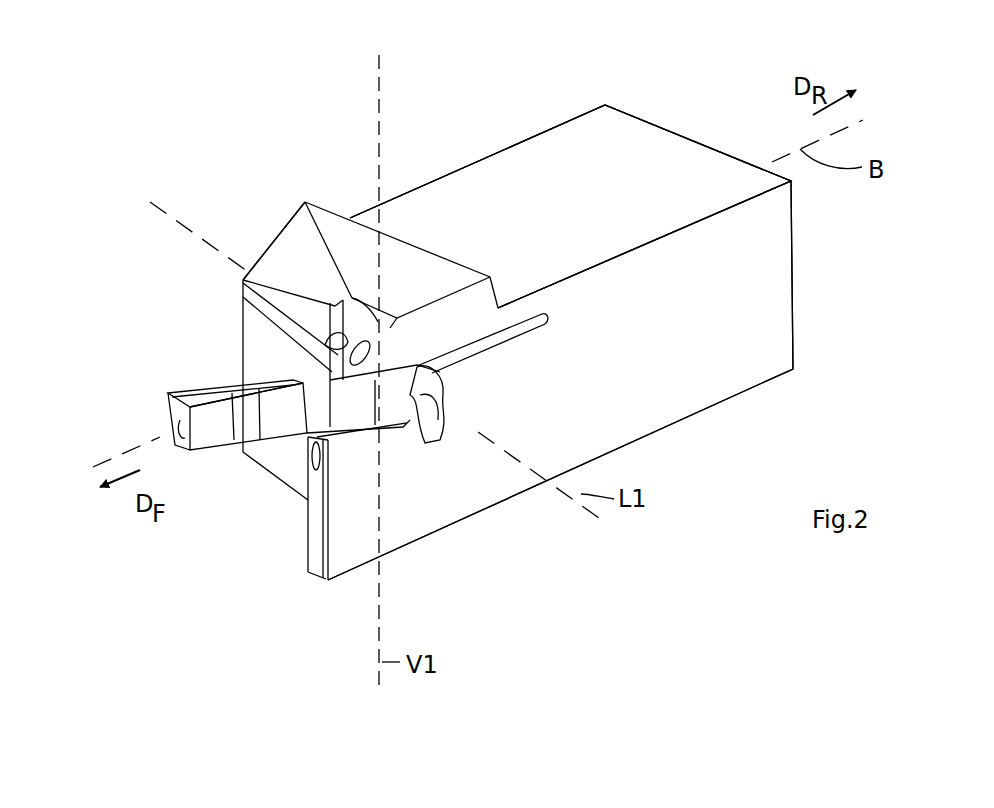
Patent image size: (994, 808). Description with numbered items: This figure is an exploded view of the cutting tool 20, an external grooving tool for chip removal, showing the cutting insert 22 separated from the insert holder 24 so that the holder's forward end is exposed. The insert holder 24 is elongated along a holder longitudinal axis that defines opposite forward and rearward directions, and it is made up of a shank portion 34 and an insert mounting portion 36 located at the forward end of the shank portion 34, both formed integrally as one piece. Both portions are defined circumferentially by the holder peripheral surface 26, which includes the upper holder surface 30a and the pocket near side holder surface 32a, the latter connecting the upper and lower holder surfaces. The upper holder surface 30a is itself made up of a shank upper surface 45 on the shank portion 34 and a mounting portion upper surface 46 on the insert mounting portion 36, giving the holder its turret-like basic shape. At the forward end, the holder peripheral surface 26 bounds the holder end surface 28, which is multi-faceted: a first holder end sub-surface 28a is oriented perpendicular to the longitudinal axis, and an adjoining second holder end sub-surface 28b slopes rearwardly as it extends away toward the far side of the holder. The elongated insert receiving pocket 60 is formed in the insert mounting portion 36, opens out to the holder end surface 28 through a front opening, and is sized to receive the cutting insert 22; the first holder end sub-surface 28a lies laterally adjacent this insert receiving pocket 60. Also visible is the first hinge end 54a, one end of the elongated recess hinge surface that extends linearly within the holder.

The cutting tool 20 is at (244, 207).
The cutting insert 22 is at (213, 507).
The insert holder 24 is at (442, 134).
The holder peripheral surface 26 is at (686, 385).
The holder end surface 28 is at (110, 310).
The first holder end sub-surface 28a is at (320, 313).
The second holder end sub-surface 28b is at (277, 368).
The upper holder surface 30a is at (561, 220).
The pocket near side holder surface 32a is at (589, 398).
The shank portion 34 is at (554, 157).
The insert mounting portion 36 is at (290, 263).
The shank upper surface 45 is at (607, 163).
The mounting portion upper surface 46 is at (346, 250).
The first hinge end 54a is at (548, 318).
The insert receiving pocket 60 is at (353, 410).